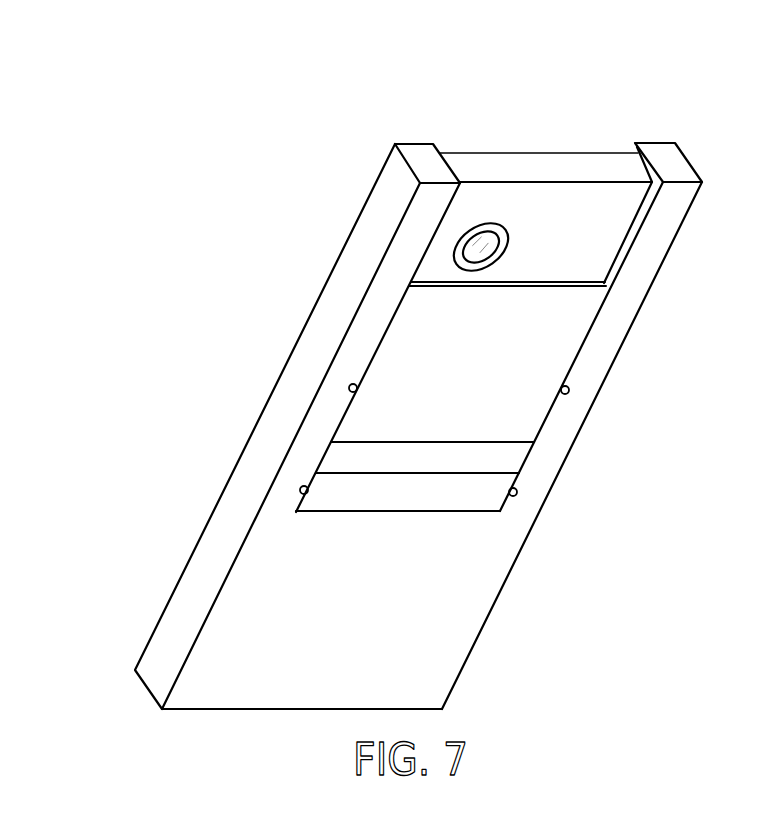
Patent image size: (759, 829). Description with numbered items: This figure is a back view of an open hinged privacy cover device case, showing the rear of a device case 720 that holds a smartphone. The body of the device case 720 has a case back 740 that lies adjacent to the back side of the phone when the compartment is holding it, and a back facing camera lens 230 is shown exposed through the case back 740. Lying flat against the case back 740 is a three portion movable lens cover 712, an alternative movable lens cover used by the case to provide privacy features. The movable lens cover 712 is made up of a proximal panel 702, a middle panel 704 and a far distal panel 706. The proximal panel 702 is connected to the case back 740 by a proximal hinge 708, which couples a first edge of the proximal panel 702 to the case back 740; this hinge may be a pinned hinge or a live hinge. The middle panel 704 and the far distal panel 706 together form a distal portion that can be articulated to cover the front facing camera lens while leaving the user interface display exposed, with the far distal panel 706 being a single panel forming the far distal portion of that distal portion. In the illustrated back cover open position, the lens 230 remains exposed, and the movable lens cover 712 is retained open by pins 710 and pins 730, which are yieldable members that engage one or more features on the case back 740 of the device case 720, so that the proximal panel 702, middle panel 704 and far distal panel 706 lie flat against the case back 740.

The back facing camera lens 230 is at (478, 226).
The proximal panel 702 is at (580, 320).
The middle panel 704 is at (515, 456).
The far distal panel 706 is at (413, 497).
The proximal hinge 708 is at (419, 282).
The pins 710 is at (300, 490).
The three portion movable lens cover 712 is at (526, 318).
The device case 720 is at (196, 592).
The pins 730 is at (349, 388).
The case back 740 is at (382, 623).